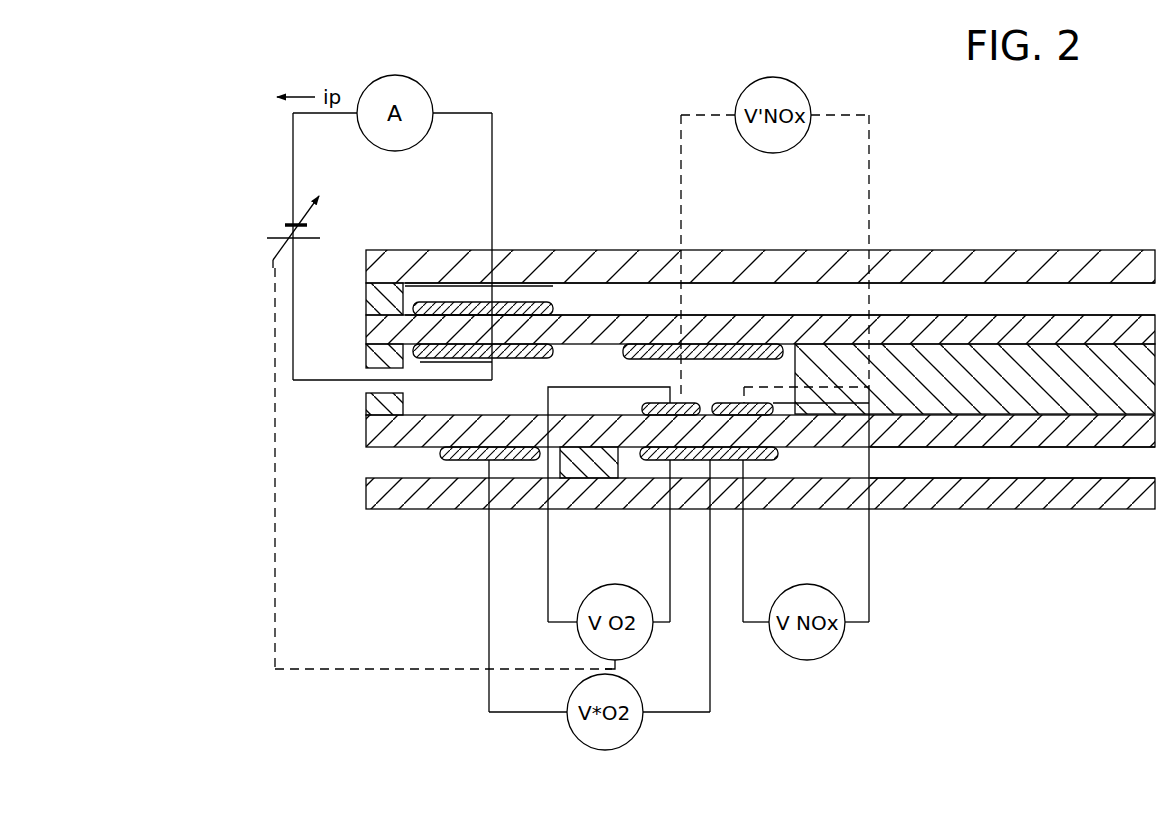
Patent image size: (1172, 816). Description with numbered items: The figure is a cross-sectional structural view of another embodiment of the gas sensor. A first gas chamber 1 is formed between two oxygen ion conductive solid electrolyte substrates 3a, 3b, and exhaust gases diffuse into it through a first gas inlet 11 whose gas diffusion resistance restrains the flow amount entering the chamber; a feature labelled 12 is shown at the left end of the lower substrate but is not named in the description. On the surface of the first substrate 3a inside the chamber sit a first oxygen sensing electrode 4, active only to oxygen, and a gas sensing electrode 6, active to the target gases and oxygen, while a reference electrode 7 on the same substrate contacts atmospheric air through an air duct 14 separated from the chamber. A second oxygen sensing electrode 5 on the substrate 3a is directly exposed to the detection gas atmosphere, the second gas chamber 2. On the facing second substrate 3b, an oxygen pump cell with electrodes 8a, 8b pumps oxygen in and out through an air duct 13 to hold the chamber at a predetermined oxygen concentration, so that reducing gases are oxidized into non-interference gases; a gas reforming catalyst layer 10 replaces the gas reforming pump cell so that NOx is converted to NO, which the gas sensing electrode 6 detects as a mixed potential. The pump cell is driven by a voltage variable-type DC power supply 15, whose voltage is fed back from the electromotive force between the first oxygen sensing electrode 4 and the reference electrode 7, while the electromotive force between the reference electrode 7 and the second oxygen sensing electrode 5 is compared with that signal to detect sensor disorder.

The first gas chamber 1 is at (695, 385).
The second gas chamber 2 is at (432, 462).
The first oxygen ion conductive solid electrolyte substrate 3a is at (1041, 445).
The second oxygen ion conductive solid electrolyte substrate 3b is at (960, 341).
The first oxygen sensing electrode 4 is at (640, 402).
The second oxygen sensing electrode 5 is at (468, 471).
The gas sensing electrode 6 is at (768, 412).
The reference electrode 7 is at (655, 467).
The oxygen pump cell electrode 8a is at (447, 342).
The oxygen pump cell electrode 8b is at (480, 300).
The gas reforming catalyst layer 10 is at (665, 342).
The first gas inlet 11 is at (357, 388).
The gas diffusion portion 12 is at (362, 458).
The air duct 13 is at (840, 312).
The air duct 14 is at (928, 460).
The voltage variable-type DC power supply 15 is at (262, 235).